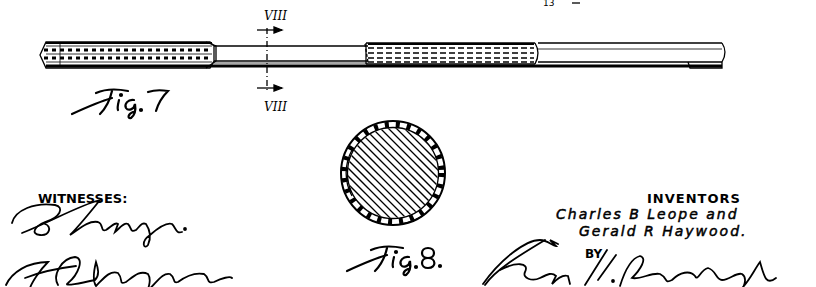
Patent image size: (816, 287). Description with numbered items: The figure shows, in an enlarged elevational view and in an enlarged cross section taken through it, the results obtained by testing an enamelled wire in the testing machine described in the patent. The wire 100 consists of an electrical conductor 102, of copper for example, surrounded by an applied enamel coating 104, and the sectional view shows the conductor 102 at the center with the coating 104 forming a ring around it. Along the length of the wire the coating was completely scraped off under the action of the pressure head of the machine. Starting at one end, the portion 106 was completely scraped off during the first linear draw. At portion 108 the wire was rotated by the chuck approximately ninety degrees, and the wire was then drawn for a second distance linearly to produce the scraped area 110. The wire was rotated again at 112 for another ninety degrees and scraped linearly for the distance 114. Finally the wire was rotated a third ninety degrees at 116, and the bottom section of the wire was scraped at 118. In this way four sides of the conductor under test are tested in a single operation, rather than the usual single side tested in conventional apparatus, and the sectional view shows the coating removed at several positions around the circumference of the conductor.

In FIG. 7, the wire 100 is at (418, 93).
In FIG. 8, the wire 100 is at (331, 178).
In FIG. 8, the electrical conductor 102 is at (428, 160).
In FIG. 7, the enamel coating 104 is at (588, 66).
In FIG. 8, the enamel coating 104 is at (435, 200).
In FIG. 7, the portion 106 is at (57, 66).
In FIG. 7, the portion 108 is at (213, 43).
In FIG. 7, the scraped area 110 is at (311, 46).
In FIG. 8, the scraped area 110 is at (400, 128).
In FIG. 7, the rotation point 112 is at (366, 64).
In FIG. 8, the rotation point 112 is at (348, 194).
In FIG. 7, the scraped distance 114 is at (432, 45).
In FIG. 7, the third rotation point 116 is at (538, 70).
In FIG. 7, the bottom scraped section 118 is at (636, 67).
In FIG. 8, the bottom scraped section 118 is at (410, 223).